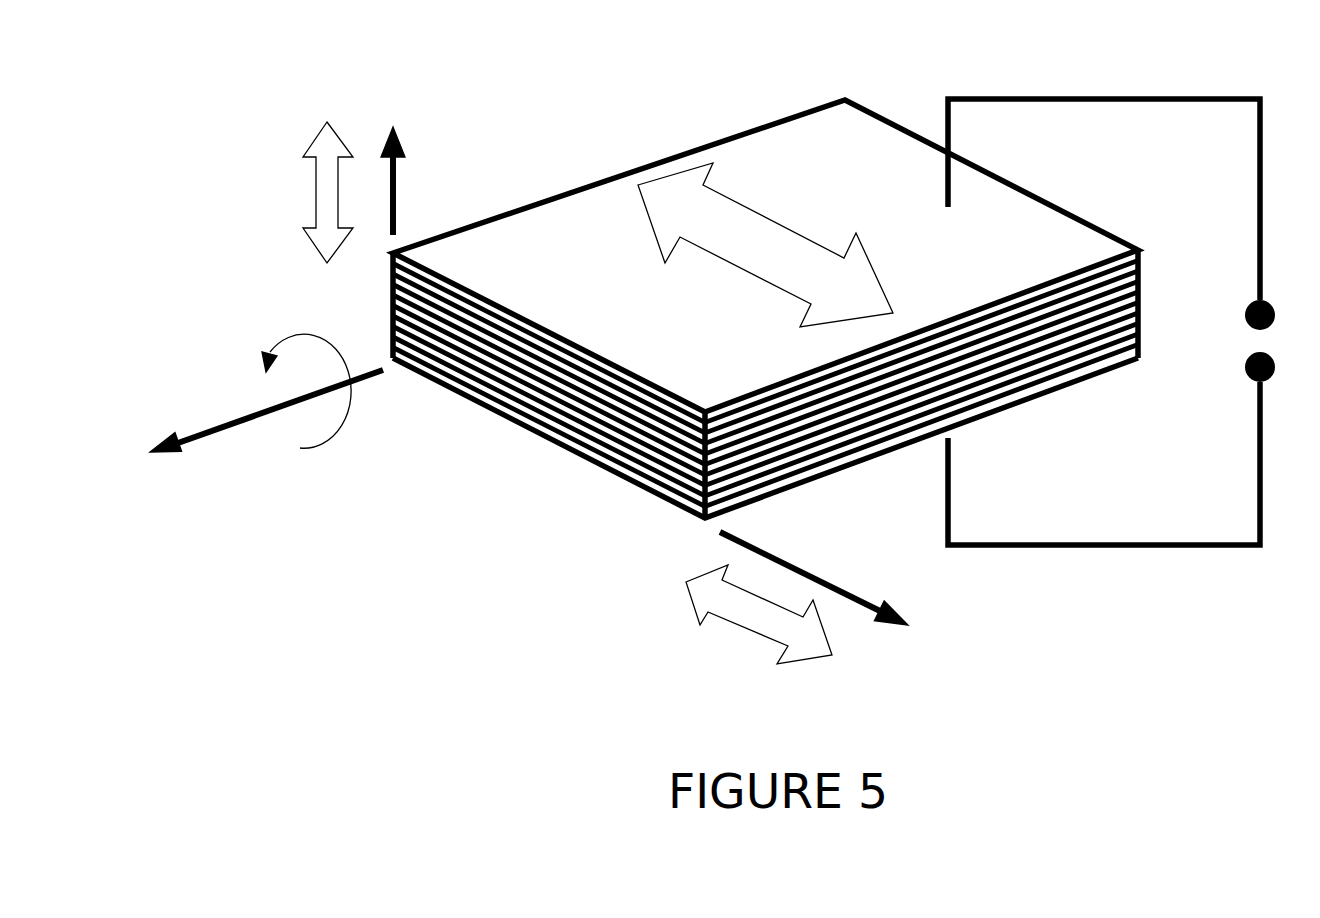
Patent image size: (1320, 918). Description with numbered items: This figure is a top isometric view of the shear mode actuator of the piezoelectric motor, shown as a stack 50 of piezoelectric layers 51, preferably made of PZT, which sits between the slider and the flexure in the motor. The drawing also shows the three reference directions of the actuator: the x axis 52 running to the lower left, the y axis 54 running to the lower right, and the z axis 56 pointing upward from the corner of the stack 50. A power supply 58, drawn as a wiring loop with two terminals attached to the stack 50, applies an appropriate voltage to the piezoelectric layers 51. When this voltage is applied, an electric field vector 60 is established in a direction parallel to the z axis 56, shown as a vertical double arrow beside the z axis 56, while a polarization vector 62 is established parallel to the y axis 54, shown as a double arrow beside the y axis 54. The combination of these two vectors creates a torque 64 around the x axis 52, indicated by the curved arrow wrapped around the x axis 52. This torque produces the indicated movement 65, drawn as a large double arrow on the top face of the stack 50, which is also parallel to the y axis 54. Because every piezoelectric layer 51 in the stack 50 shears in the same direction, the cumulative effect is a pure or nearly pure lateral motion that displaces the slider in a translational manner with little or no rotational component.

The stack 50 is at (665, 512).
The piezoelectric layers 51 is at (593, 458).
The x axis 52 is at (258, 410).
The y axis 54 is at (850, 592).
The z axis 56 is at (393, 210).
The power supply 58 is at (1131, 322).
The electric field vector 60 is at (318, 180).
The polarization vector 62 is at (777, 625).
The torque 64 is at (350, 410).
The movement 65 is at (737, 237).